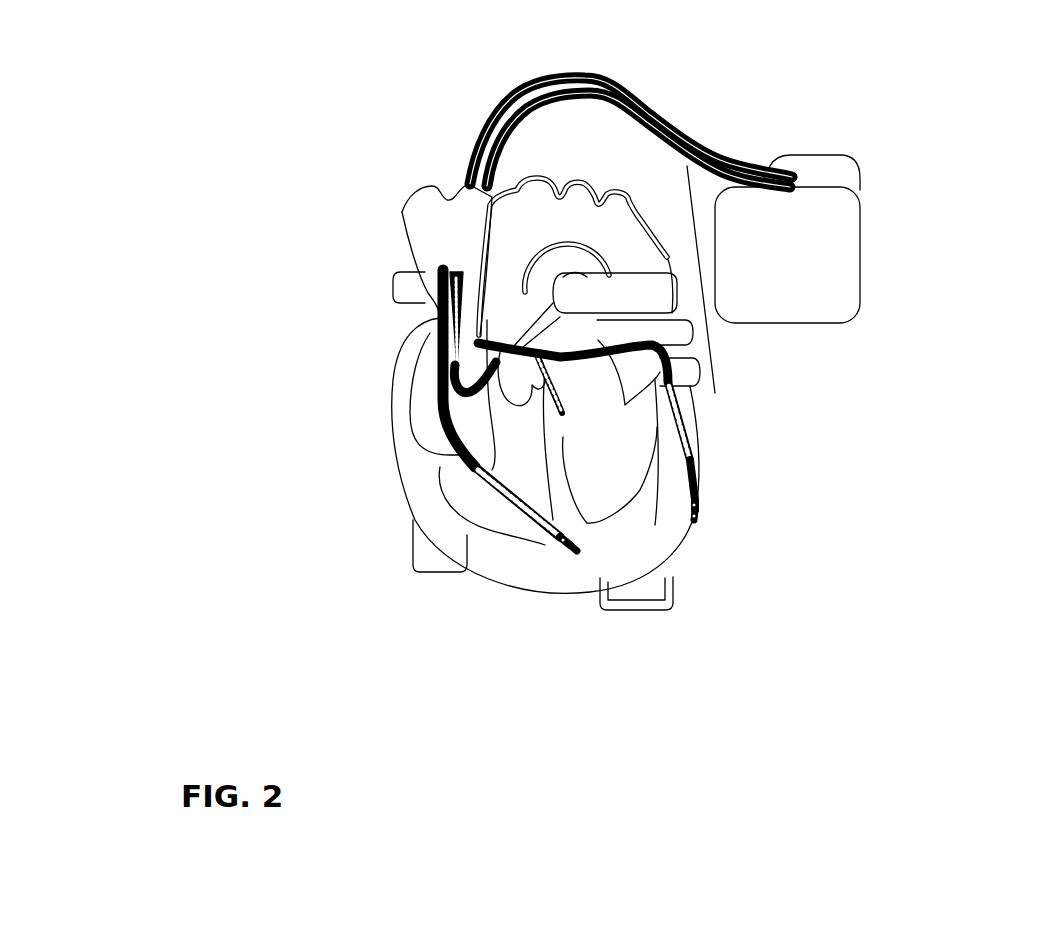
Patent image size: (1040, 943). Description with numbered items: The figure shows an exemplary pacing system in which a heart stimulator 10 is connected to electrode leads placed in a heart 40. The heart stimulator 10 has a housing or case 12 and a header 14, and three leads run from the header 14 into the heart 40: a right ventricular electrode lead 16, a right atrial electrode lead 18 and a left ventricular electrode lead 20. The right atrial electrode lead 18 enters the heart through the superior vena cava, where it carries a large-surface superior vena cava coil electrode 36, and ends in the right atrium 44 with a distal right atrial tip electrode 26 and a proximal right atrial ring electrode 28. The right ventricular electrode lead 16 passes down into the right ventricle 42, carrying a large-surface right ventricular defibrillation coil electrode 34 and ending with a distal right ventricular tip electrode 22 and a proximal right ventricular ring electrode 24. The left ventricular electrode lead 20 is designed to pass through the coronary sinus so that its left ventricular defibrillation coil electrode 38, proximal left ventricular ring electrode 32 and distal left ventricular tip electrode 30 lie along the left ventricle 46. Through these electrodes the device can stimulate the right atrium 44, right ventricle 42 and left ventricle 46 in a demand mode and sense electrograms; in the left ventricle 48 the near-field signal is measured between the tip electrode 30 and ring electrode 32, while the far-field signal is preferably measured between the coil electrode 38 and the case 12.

The heart stimulator 10 is at (711, 250).
The housing or case 12 is at (812, 296).
The header 14 is at (835, 167).
The right ventricular electrode lead 16 is at (477, 152).
The right atrial electrode lead 18 is at (508, 106).
The left ventricular electrode lead 20 is at (707, 297).
The right ventricular tip electrode 22 is at (578, 553).
The right ventricular ring electrode 24 is at (563, 555).
The right atrial tip electrode 26 is at (437, 352).
The right atrial ring electrode 28 is at (437, 374).
The left ventricular tip electrode 30 is at (695, 525).
The left ventricular ring electrode 32 is at (698, 508).
The right ventricular defibrillation coil electrode 34 is at (492, 477).
The superior vena cava coil electrode 36 is at (437, 330).
The left ventricular defibrillation coil electrode 38 is at (692, 446).
The heart 40 is at (356, 493).
The right ventricle 42 is at (492, 512).
The right atrium 44 is at (425, 425).
The left ventricle 46 is at (620, 507).
The left ventricle 48 is at (412, 245).